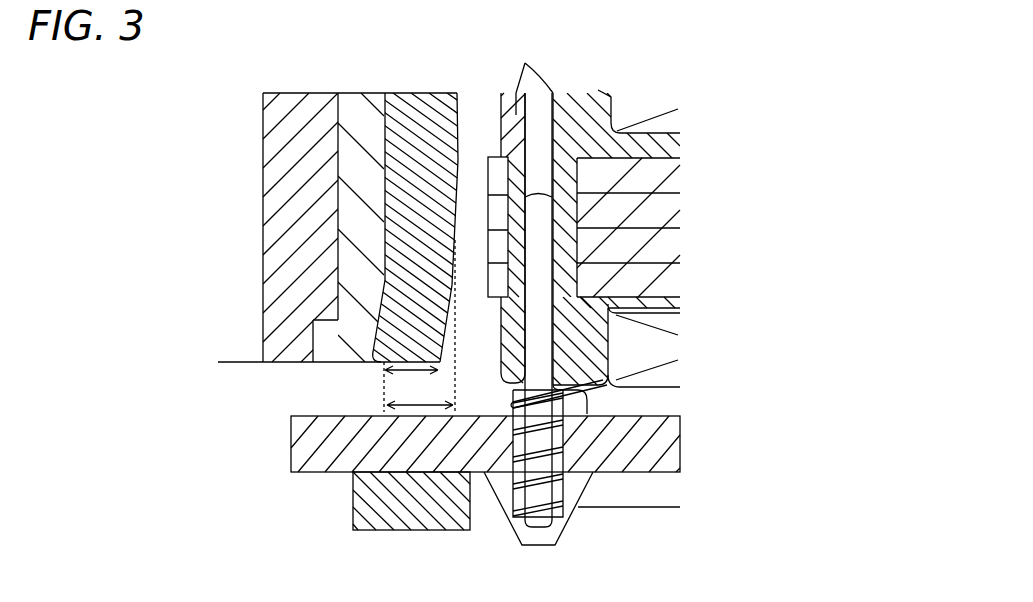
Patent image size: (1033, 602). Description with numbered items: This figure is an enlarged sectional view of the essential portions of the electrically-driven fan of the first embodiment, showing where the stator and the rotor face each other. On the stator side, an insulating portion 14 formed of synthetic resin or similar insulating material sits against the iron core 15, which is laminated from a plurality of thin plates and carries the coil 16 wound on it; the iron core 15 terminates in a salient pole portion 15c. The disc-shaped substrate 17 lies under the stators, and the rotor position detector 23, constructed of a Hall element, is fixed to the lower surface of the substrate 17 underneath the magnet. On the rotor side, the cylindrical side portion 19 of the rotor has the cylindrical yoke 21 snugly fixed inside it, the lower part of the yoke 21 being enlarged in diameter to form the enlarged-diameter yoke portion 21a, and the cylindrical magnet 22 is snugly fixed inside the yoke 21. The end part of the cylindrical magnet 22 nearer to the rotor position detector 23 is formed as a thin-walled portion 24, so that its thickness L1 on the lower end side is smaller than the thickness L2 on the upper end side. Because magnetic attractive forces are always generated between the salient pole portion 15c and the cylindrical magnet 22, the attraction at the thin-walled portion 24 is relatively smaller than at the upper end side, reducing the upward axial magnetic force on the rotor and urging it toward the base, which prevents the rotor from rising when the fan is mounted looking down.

The insulating portion 14 is at (527, 62).
The iron core 15 is at (502, 170).
The salient pole portion 15c is at (486, 212).
The coil 16 is at (598, 90).
The disc-shaped substrate 17 is at (320, 452).
The cylindrical side portion 19 is at (293, 250).
The cylindrical yoke 21 is at (353, 213).
The enlarged-diameter yoke portion 21a is at (377, 363).
The cylindrical magnet 22 is at (407, 160).
The rotor position detector 23 is at (377, 505).
The thin-walled portion 24 is at (397, 330).
The thickness of the thin-walled portion L1 is at (385, 373).
The thickness of the upper end side L2 is at (420, 405).